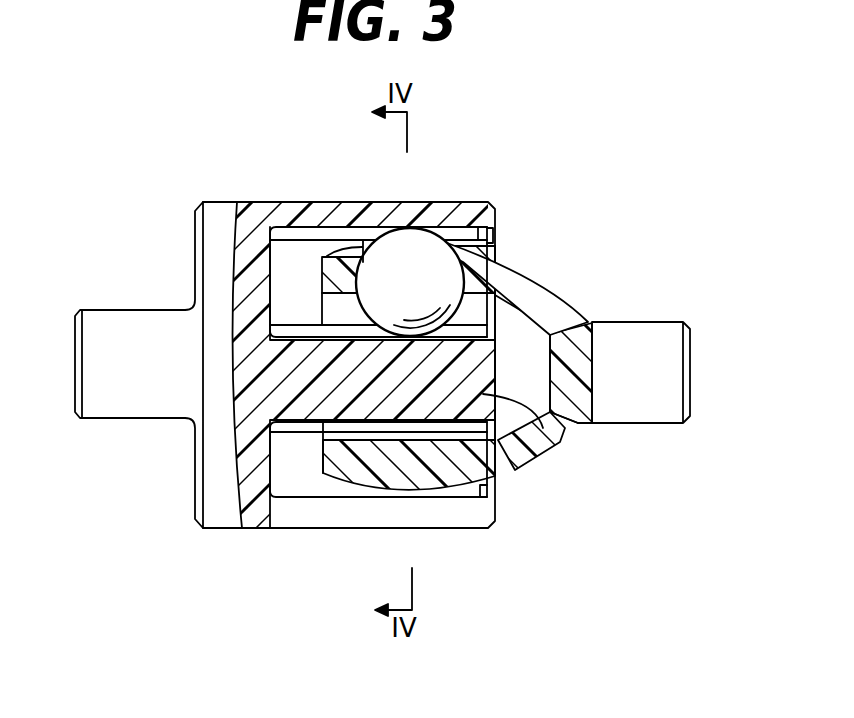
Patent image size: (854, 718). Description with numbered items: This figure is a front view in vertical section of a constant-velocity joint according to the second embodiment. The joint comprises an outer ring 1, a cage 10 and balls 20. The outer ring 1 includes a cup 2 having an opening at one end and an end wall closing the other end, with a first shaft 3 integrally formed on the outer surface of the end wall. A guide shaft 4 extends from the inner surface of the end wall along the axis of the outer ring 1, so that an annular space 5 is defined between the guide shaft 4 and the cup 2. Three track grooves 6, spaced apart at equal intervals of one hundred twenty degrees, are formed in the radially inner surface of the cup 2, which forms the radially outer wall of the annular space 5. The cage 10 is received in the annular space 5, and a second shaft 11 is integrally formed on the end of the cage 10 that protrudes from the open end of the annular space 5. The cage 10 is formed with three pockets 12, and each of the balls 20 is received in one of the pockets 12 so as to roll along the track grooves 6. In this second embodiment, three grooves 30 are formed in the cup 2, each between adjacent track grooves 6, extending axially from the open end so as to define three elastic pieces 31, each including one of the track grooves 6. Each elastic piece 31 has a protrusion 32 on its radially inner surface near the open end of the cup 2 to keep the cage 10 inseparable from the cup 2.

The outer ring 1 is at (243, 202).
The cup 2 is at (300, 202).
The first shaft 3 is at (130, 328).
The guide shaft 4 is at (560, 442).
The annular space 5 is at (300, 474).
The track grooves 6 is at (477, 225).
The cage 10 is at (552, 292).
The second shaft 11 is at (645, 330).
The pockets 12 is at (372, 241).
The balls 20 is at (403, 247).
The grooves 30 is at (477, 513).
The elastic pieces 31 is at (495, 224).
The protrusion 32 is at (493, 234).